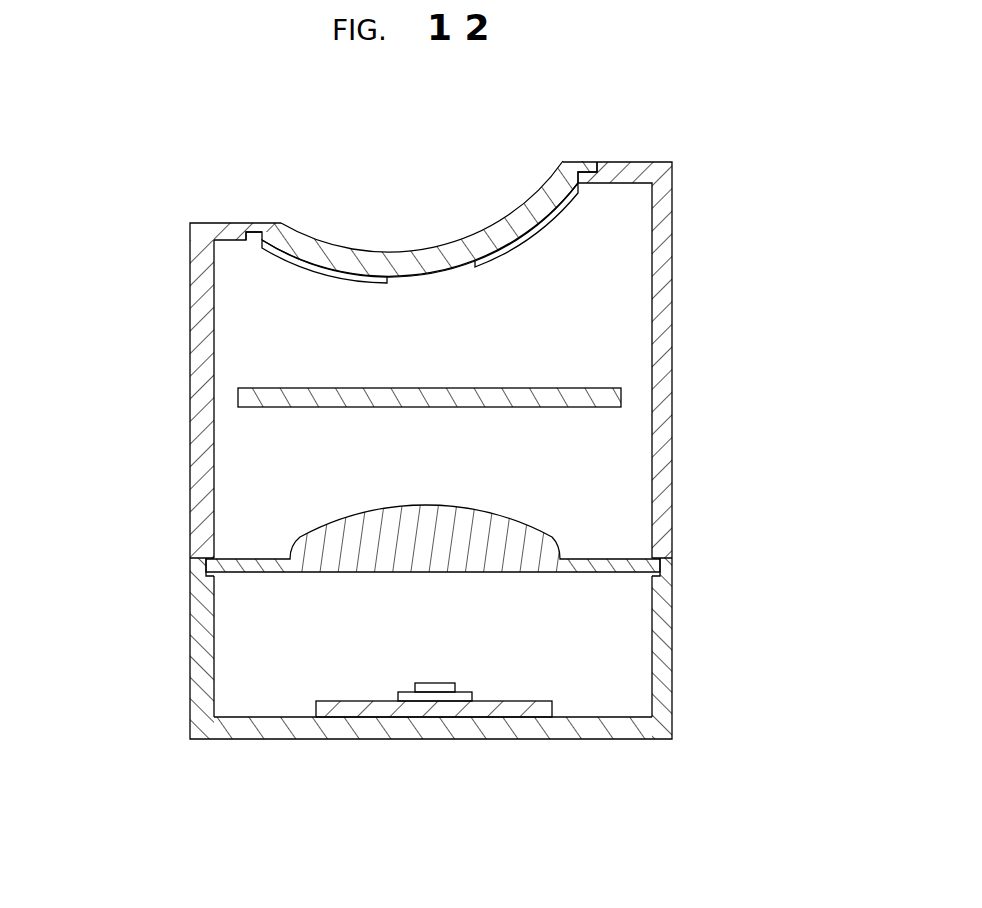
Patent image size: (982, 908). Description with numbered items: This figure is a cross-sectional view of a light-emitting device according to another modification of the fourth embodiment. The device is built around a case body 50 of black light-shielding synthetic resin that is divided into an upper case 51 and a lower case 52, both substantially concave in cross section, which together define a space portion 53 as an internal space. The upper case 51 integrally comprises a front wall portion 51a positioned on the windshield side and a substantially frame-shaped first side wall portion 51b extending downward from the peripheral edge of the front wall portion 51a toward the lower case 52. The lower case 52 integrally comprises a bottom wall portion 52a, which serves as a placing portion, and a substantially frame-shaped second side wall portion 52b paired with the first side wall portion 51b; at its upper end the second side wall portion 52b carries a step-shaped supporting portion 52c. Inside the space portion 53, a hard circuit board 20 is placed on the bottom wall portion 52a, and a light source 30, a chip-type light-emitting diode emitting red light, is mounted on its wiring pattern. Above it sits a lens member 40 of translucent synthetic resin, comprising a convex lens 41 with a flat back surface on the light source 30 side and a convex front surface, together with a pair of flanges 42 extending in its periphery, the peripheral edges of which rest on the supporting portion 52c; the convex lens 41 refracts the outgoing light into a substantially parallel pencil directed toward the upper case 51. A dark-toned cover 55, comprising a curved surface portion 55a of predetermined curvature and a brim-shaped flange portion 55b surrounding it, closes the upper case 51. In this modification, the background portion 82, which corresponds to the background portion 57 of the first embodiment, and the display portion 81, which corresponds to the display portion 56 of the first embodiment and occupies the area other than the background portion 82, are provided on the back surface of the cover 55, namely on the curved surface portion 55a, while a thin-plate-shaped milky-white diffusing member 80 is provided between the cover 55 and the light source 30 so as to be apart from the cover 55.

The circuit board 20 is at (535, 711).
The light source 30 is at (425, 688).
The lens member 40 is at (433, 536).
The convex lens 41 is at (372, 522).
The flanges 42 is at (244, 567).
The case body 50 is at (435, 452).
The upper case 51 is at (430, 332).
The front wall portion 51a is at (230, 232).
The first side wall portion 51b is at (203, 340).
The lower case 52 is at (437, 678).
The bottom wall portion 52a is at (363, 726).
The second side wall portion 52b is at (662, 663).
The supporting portion 52c is at (208, 578).
The space portion 53 is at (245, 438).
The cover 55 is at (427, 235).
The curved surface portion 55a is at (497, 245).
The flange portion 55b is at (588, 168).
The display portion 56 is at (431, 315).
The background portion 57 is at (420, 252).
The diffusing member 80 is at (322, 397).
The display portion 81 is at (421, 283).
The background portion 82 is at (305, 258).